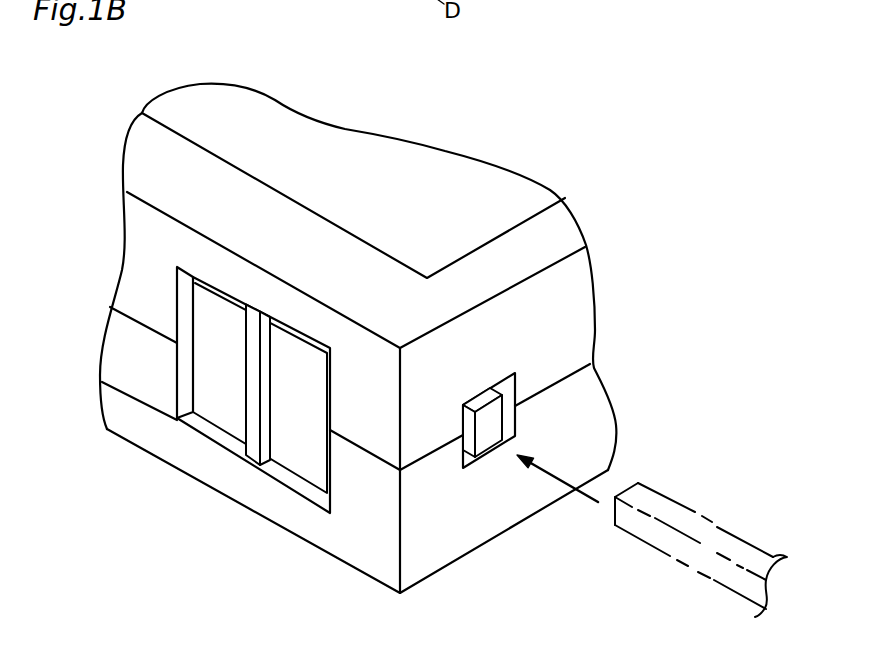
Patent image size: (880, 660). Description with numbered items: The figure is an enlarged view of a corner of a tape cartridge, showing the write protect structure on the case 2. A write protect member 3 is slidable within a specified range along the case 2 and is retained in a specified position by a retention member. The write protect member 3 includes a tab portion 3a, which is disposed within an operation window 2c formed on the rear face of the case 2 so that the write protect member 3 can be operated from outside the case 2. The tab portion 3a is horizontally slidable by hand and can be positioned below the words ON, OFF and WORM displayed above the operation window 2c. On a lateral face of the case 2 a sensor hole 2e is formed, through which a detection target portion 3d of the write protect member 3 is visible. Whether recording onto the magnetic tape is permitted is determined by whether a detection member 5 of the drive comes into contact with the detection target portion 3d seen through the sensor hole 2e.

The case 2 is at (557, 232).
The operation window 2c is at (190, 353).
The sensor hole 2e is at (473, 455).
The write protect member 3 is at (220, 378).
The tab portion 3a is at (253, 433).
The detection target portion 3d is at (490, 420).
The detection member 5 is at (718, 530).